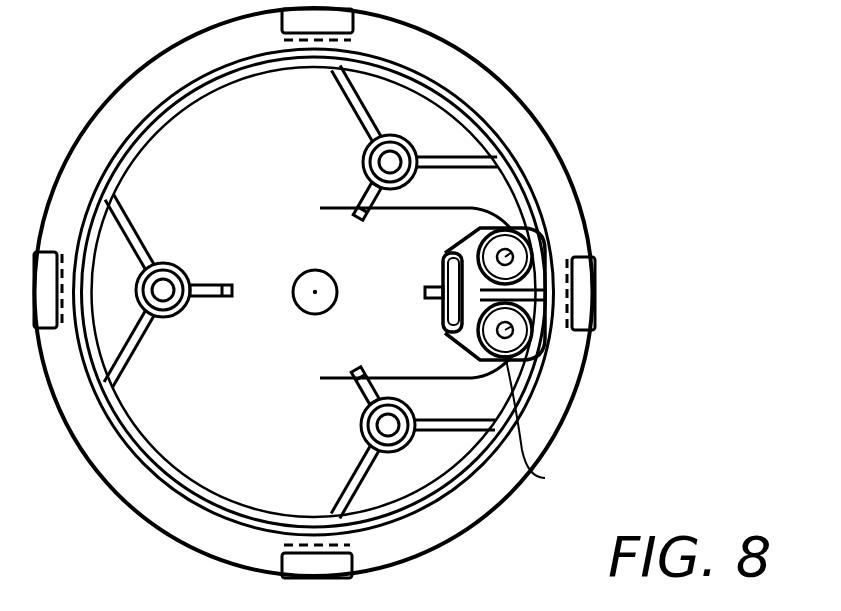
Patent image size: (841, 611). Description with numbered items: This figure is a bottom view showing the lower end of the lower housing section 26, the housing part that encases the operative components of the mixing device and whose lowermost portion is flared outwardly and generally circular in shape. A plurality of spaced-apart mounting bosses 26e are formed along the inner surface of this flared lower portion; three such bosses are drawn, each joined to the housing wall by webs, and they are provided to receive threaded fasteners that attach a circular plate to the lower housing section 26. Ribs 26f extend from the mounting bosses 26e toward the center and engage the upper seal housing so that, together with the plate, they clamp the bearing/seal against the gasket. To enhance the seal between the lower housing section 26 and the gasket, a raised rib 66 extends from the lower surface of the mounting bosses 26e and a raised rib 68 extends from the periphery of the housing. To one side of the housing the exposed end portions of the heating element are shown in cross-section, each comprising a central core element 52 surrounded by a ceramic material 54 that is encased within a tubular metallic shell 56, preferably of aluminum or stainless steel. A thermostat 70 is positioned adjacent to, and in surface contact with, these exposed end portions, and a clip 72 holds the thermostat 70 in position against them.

The lower housing section 26 is at (548, 124).
The mounting bosses 26e is at (172, 262).
The ribs 26f is at (212, 297).
The central core element 52 is at (512, 252).
The ceramic material 54 is at (515, 235).
The tubular metallic shell 56 is at (548, 275).
The raised rib 66 is at (178, 312).
The raised rib 68 is at (545, 478).
The thermostat 70 is at (445, 280).
The clip 72 is at (465, 356).